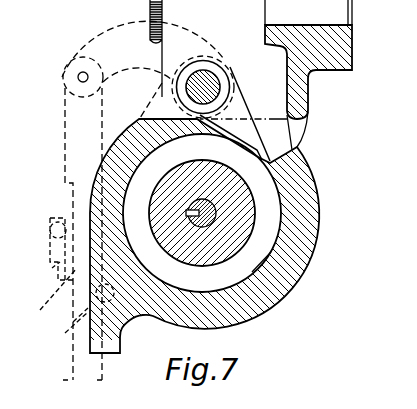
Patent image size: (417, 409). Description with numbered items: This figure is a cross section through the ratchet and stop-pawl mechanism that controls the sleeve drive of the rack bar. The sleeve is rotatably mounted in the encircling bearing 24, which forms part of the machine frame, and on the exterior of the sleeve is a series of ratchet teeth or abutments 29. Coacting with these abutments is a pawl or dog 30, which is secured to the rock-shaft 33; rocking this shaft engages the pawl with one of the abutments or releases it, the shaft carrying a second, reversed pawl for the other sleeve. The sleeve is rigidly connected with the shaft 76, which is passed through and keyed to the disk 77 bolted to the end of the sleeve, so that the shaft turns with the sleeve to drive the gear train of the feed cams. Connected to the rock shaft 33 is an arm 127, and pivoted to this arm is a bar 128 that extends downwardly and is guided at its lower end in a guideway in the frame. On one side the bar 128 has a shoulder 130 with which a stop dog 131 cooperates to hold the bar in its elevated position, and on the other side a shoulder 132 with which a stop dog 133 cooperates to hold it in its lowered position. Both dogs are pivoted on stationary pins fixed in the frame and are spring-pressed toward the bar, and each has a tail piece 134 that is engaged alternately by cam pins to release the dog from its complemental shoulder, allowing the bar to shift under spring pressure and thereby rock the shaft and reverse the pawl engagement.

The encircling bearing 24 is at (307, 231).
The ratchet teeth or abutments 29 is at (250, 273).
The pawl or dog 30 is at (255, 140).
The rock-shaft 33 is at (212, 80).
The shaft 76 is at (218, 216).
The disk 77 is at (228, 254).
The arm 127 is at (110, 36).
The bar 128 is at (78, 141).
The shoulder 130 is at (201, 213).
The stop dog 131 is at (64, 299).
The shoulder 132 is at (50, 258).
The stop dog 133 is at (52, 277).
The tail piece 134 is at (88, 207).